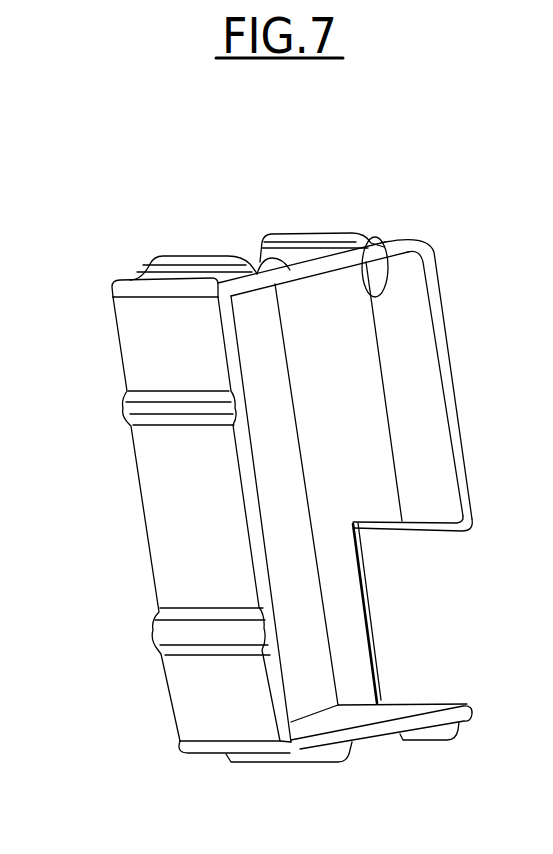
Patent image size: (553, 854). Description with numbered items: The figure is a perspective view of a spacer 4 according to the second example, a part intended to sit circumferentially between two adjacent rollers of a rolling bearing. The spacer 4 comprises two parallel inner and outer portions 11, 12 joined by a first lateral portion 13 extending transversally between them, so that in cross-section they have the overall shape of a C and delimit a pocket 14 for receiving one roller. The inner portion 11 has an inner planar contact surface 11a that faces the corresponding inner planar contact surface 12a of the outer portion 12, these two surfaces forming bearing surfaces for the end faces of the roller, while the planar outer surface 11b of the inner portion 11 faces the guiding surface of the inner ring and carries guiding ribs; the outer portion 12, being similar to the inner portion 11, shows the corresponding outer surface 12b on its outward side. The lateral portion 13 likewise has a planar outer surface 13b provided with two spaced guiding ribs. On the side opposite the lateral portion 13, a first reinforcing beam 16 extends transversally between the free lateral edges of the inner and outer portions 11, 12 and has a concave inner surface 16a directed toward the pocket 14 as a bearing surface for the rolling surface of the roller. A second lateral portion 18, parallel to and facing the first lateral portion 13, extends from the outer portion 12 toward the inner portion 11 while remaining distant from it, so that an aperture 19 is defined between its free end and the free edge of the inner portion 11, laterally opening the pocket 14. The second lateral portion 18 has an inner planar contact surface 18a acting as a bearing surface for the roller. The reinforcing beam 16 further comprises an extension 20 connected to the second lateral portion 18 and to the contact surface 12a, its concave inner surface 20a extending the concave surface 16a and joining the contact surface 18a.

The spacer 4 is at (173, 226).
The inner portion 11 is at (358, 756).
The inner planar contact surface 11a is at (323, 728).
The planar outer surface 11b is at (402, 738).
The outer portion 12 is at (251, 242).
The inner planar contact surface 12a is at (386, 266).
The ridge 12b is at (315, 257).
The lateral portion 13 is at (156, 518).
The planar outer surface 13b is at (160, 586).
The pocket 14 is at (277, 462).
The first reinforcing beam 16 is at (378, 616).
The concave inner surface 16a is at (358, 665).
The second lateral portion 18 is at (458, 378).
The inner planar contact surface 18a is at (422, 328).
The aperture 19 is at (462, 598).
The extension 20 is at (370, 459).
The concave inner surface 20a is at (340, 408).